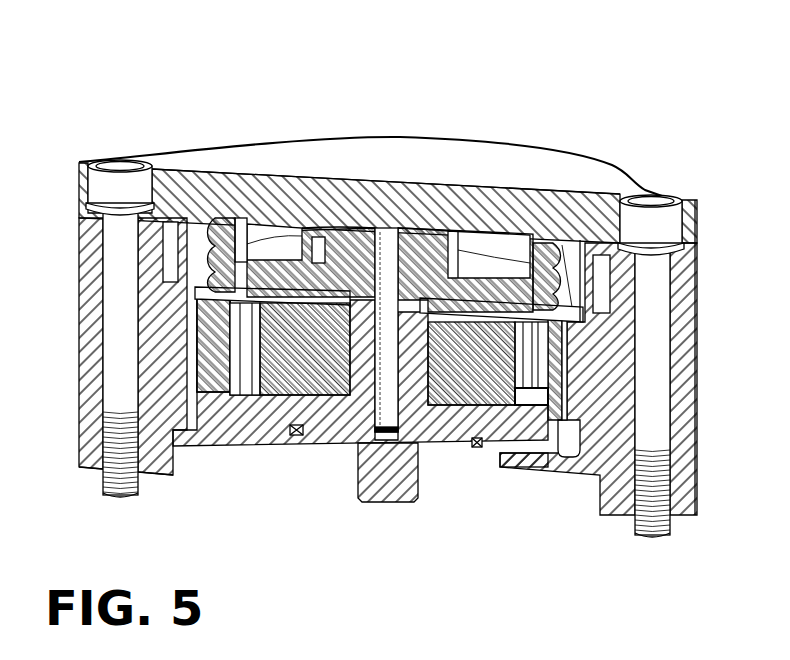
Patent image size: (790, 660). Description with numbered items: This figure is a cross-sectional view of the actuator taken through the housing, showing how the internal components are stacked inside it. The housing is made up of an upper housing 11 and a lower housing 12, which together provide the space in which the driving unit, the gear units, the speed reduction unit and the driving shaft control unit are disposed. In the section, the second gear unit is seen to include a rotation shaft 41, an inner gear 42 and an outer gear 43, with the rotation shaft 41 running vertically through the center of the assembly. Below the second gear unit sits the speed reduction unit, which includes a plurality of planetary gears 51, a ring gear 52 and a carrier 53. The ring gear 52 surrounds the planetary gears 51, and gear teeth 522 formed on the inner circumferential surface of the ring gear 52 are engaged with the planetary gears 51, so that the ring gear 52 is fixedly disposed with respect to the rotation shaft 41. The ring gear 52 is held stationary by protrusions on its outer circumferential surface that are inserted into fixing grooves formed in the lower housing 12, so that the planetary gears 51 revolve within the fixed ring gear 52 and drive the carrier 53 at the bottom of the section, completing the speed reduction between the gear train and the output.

The upper housing 11 is at (466, 165).
The lower housing 12 is at (618, 495).
The rotation shaft 41 is at (387, 228).
The inner gear 42 is at (276, 275).
The outer gear 43 is at (219, 220).
The planetary gears 51 is at (314, 383).
The ring gear 52 is at (207, 378).
The gear teeth 522 is at (245, 378).
The carrier 53 is at (385, 488).